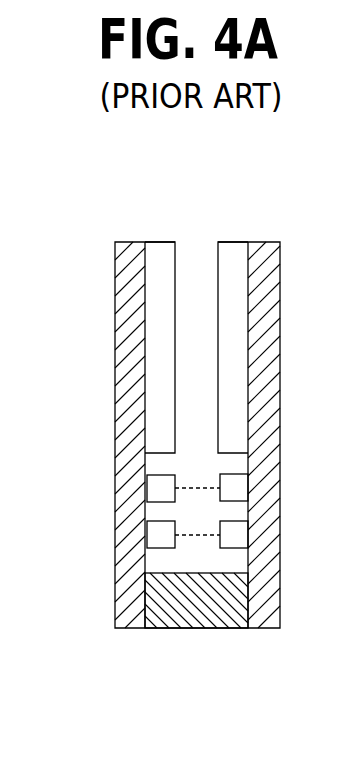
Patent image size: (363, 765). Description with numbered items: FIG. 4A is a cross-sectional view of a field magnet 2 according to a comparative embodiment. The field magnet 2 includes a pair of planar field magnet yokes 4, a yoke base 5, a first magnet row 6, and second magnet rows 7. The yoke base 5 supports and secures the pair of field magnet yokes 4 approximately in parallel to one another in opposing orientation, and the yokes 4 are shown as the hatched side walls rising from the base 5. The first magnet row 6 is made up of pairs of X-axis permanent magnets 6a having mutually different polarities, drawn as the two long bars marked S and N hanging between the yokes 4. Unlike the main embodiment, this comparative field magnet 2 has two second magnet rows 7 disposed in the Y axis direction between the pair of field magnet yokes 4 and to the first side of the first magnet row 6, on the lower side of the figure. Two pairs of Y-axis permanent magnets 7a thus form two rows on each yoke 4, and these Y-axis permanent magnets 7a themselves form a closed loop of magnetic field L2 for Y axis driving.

The field magnet 2 is at (118, 217).
The field magnet yoke 4 is at (135, 243).
The yoke base 5 is at (195, 618).
The first magnet row 6 is at (246, 457).
The X-axis permanent magnet 6a is at (167, 267).
The second magnet row 7 is at (62, 434).
The Y-axis permanent magnet 7a is at (218, 474).
The closed loop of magnetic field L2 is at (128, 512).